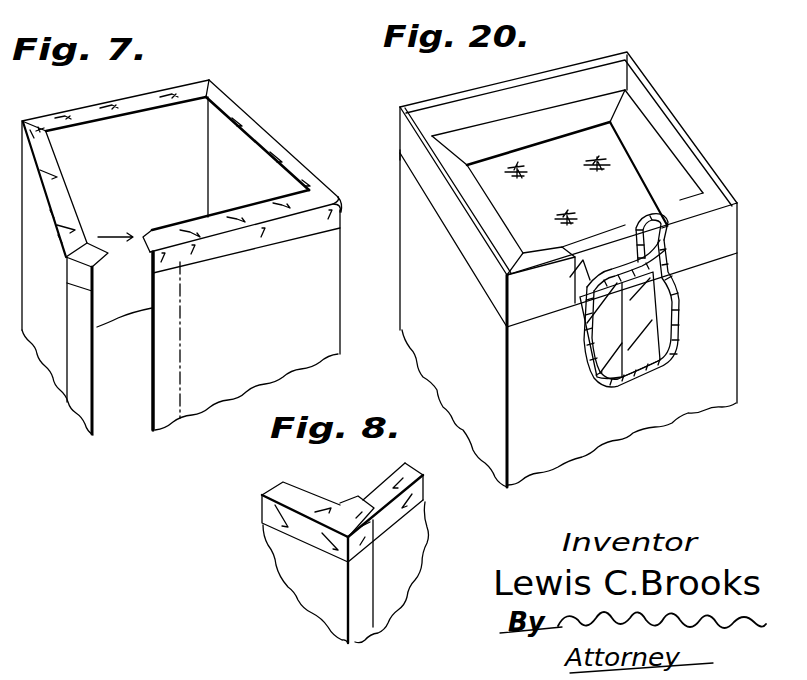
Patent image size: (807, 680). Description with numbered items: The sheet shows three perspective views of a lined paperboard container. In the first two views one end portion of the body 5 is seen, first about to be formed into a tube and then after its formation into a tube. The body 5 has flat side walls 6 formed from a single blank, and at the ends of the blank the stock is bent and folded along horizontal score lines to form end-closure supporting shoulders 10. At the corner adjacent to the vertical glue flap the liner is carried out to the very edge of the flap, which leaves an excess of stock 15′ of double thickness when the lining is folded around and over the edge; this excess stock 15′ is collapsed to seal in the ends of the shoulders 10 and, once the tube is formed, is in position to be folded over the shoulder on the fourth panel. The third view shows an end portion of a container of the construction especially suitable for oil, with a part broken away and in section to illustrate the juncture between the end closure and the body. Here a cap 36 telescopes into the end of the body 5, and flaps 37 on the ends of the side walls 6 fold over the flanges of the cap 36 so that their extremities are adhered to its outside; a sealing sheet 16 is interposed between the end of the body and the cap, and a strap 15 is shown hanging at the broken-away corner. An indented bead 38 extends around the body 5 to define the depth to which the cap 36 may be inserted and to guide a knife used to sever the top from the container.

In FIG. 7, the body 5 is at (341, 211).
In FIG. 20, the body 5 is at (397, 288).
In FIG. 7, the side walls 6 is at (156, 182).
In FIG. 20, the side walls 6 is at (465, 340).
In FIG. 7, the end-closure supporting shoulders 10 is at (228, 104).
In FIG. 8, the end-closure supporting shoulders 10 is at (272, 488).
In FIG. 7, the excess stock 15′ is at (98, 237).
In FIG. 8, the excess stock 15′ is at (352, 506).
In FIG. 20, the strap 15 is at (678, 335).
In FIG. 20, the sealing sheet 16 is at (628, 264).
In FIG. 20, the cap 36 is at (574, 184).
In FIG. 20, the flaps 37 is at (558, 118).
In FIG. 20, the indented bead 38 is at (433, 215).